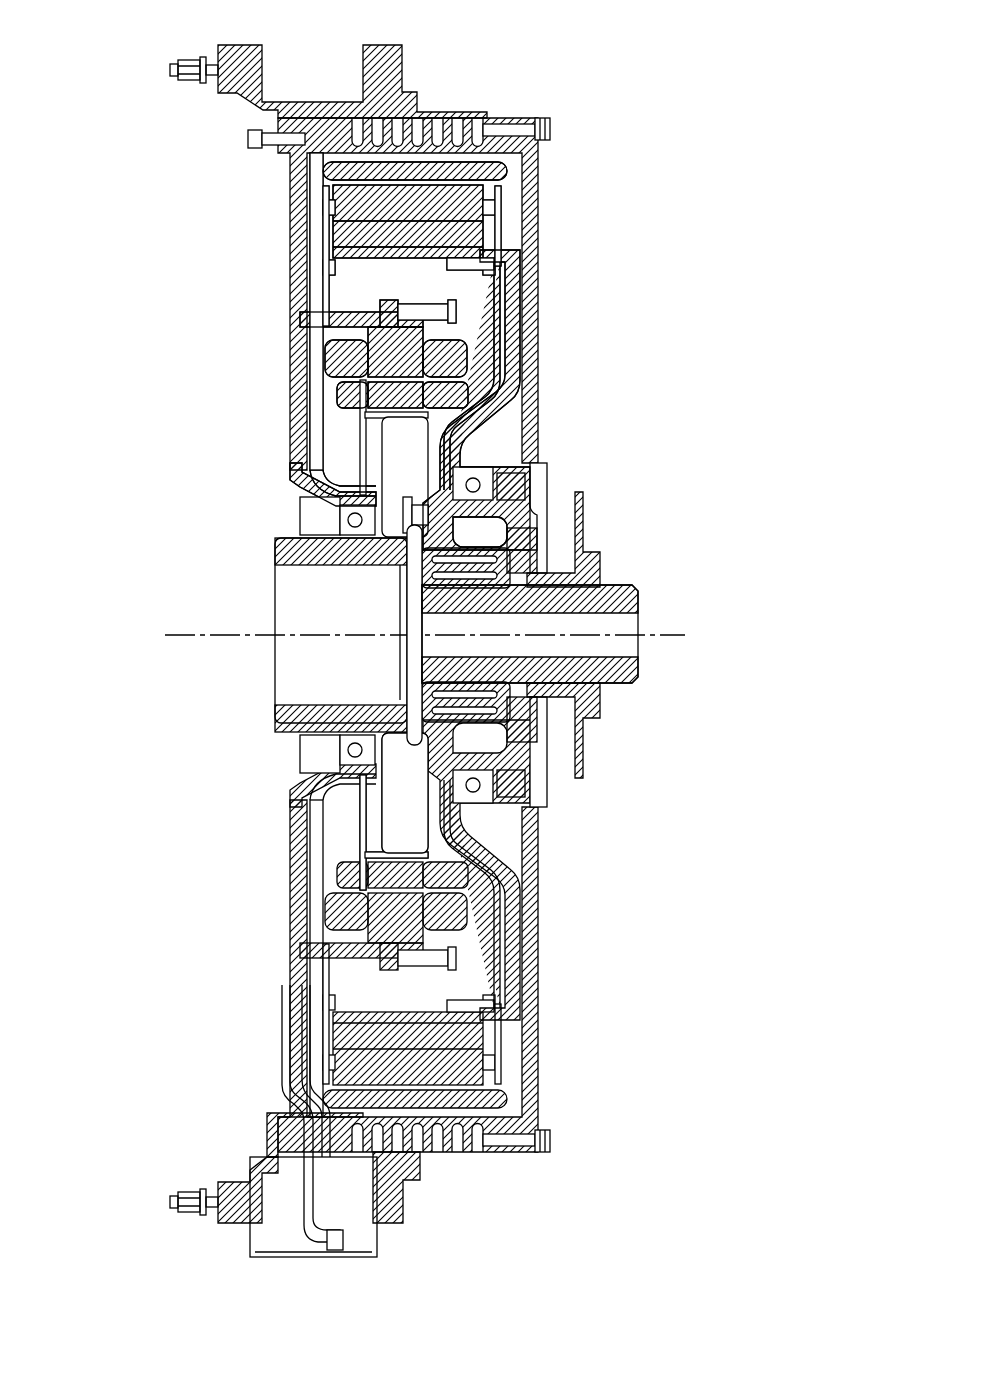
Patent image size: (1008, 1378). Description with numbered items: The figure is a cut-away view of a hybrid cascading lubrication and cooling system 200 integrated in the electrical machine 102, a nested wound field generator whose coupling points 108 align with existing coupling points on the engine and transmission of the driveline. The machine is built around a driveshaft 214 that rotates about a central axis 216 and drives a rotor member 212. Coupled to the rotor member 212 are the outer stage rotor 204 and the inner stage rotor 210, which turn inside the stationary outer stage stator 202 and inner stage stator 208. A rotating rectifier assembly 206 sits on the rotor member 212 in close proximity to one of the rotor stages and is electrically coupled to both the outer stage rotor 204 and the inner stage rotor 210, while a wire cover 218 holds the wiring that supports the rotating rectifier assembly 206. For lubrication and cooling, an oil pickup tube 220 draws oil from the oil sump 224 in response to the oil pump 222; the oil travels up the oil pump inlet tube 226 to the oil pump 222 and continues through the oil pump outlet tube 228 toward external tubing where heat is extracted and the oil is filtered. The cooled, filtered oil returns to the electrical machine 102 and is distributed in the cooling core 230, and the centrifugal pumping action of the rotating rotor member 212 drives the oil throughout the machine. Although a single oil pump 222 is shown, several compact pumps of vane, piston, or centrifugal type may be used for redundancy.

The electrical machine 102 is at (402, 68).
The coupling points 108 is at (192, 56).
The hybrid cascading lubrication and cooling system 200 is at (600, 78).
The outer stage stator 202 is at (330, 172).
The outer stage rotor 204 is at (345, 237).
The rotating rectifier assembly 206 is at (466, 258).
The inner stage stator 208 is at (370, 352).
The inner stage rotor 210 is at (370, 402).
The rotor member 212 is at (512, 277).
The driveshaft 214 is at (358, 700).
The central axis 216 is at (660, 636).
The wire cover 218 is at (497, 320).
The oil pickup tube 220 is at (336, 1242).
The oil pump 222 is at (385, 796).
The oil sump 224 is at (283, 1243).
The oil pump inlet tube 226 is at (288, 1022).
The oil pump outlet tube 228 is at (298, 472).
The cooling core 230 is at (308, 210).